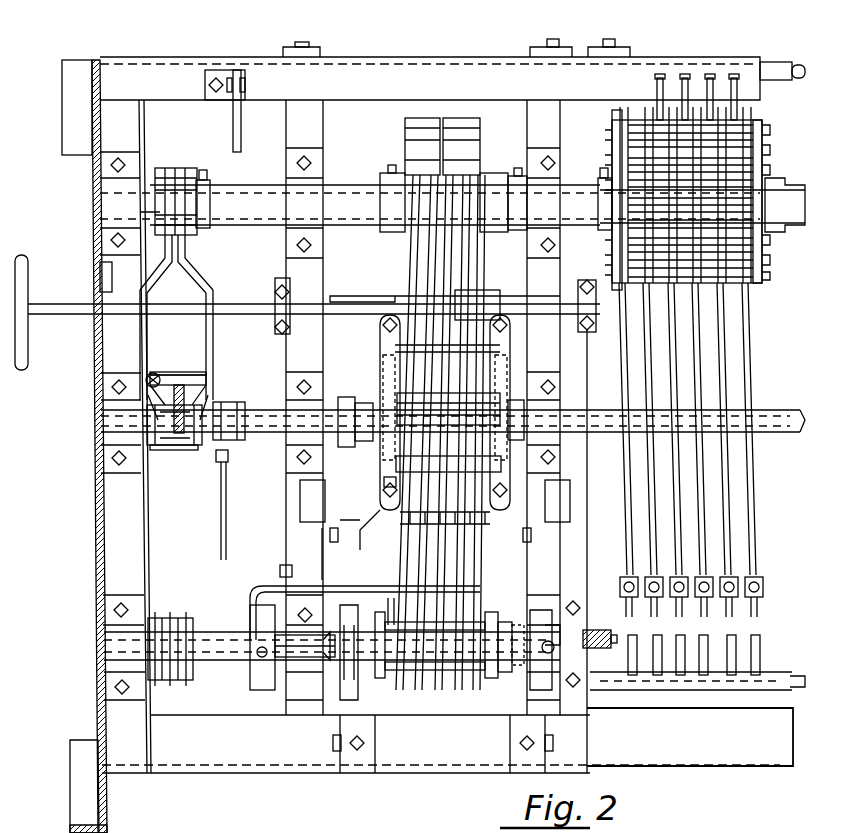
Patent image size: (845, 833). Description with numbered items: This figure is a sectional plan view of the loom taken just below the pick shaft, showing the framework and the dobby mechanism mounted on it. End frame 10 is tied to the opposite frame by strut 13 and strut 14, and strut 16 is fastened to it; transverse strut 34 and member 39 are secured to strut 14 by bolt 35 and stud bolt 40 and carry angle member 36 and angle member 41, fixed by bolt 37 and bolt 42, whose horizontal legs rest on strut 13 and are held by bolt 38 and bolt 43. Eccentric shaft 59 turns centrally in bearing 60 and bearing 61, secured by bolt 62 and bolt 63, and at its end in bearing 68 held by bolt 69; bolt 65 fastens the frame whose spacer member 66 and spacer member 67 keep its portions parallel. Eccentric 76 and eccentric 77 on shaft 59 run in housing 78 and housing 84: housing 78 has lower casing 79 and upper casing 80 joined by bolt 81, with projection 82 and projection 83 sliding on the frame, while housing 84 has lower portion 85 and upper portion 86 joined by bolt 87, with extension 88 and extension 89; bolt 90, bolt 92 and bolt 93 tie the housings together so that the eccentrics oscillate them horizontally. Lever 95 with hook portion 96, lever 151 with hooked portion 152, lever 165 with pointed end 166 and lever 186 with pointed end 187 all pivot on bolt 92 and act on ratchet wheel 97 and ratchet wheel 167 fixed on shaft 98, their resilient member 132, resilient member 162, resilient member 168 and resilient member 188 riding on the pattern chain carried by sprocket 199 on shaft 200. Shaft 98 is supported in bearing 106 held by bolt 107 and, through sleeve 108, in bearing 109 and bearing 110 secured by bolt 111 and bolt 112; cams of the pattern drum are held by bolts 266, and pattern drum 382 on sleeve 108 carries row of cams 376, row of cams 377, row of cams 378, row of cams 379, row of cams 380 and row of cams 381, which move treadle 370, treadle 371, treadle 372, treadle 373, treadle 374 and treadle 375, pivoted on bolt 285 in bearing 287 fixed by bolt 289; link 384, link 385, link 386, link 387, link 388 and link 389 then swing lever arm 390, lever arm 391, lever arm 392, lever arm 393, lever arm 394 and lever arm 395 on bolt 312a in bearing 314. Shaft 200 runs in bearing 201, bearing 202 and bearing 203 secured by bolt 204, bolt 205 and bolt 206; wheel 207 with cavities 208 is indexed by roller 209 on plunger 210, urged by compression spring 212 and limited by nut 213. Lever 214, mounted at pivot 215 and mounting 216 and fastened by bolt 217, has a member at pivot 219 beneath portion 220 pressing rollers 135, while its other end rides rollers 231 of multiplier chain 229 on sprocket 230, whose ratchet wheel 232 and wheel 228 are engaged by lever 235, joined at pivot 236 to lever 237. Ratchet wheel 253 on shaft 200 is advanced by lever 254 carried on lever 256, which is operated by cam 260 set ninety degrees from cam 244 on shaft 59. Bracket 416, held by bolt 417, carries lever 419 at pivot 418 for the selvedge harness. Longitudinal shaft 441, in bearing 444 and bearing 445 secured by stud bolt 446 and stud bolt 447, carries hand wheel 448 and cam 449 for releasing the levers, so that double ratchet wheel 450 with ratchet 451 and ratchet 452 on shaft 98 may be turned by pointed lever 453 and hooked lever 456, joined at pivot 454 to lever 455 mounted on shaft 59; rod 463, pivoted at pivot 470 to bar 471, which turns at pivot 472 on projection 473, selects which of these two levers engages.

The frame side wall 10 is at (94, 492).
The lower frame rail 13 is at (412, 760).
The upper frame rail 14 is at (433, 60).
The frame plate 16 is at (108, 515).
The bracket 34 is at (540, 50).
The bracket stud 35 is at (552, 38).
The support 36 is at (538, 760).
The stud 37 is at (545, 730).
The bearing block 38 is at (516, 742).
The bracket 39 is at (305, 52).
The stud 40 is at (298, 44).
The stud 41 is at (357, 760).
The stud 42 is at (333, 745).
The bearing block 43 is at (366, 744).
The shaft 59 is at (100, 420).
The bearing 60 is at (332, 422).
The bearing 61 is at (542, 420).
The bearing 62 is at (296, 387).
The bearing 63 is at (552, 380).
The stud 65 is at (330, 537).
The shaft 66 is at (372, 300).
The bar 67 is at (370, 545).
The bearing 68 is at (108, 400).
The bearing 69 is at (110, 386).
The arm 76 is at (380, 360).
The arm 77 is at (508, 362).
The arm 78 is at (382, 492).
The pin 79 is at (390, 478).
The link 80 is at (383, 370).
The pivot 81 is at (382, 322).
The bearing 82 is at (305, 320).
The bracket 83 is at (312, 501).
The link 84 is at (500, 392).
The arm 85 is at (500, 478).
The link 86 is at (507, 372).
The pivot 87 is at (507, 323).
The bearing 88 is at (578, 323).
The bracket 89 is at (557, 501).
The rod 90 is at (420, 350).
The gear 92 is at (396, 404).
The arm 93 is at (502, 460).
The gear 95 is at (415, 520).
The collar 96 is at (396, 168).
The gear 97 is at (413, 118).
The shaft 98 is at (105, 209).
The shaft sleeve 106 is at (100, 192).
The bearing 107 is at (110, 165).
The collar 108 is at (232, 188).
The collar 109 is at (520, 160).
The frame plate 110 is at (285, 160).
The frame plate 111 is at (557, 155).
The bearing 112 is at (302, 155).
The gear 132 is at (435, 664).
The pawl 135 is at (515, 659).
The gear 151 is at (440, 545).
The gear 152 is at (418, 414).
The gear 162 is at (435, 684).
The gear 165 is at (470, 536).
The gear 166 is at (460, 414).
The gear 167 is at (450, 118).
The gear 168 is at (450, 698).
The gear 186 is at (478, 545).
The collar 187 is at (486, 172).
The gear 188 is at (482, 680).
The clutch member 199 is at (498, 620).
The shaft 200 is at (108, 645).
The bearing 201 is at (108, 632).
The bracket 202 is at (305, 745).
The bearing 203 is at (572, 600).
The bearing 204 is at (112, 610).
The bearing 205 is at (304, 610).
The bearing 206 is at (575, 690).
The lever 207 is at (533, 608).
The link 208 is at (268, 690).
The link 209 is at (262, 630).
The link 210 is at (285, 655).
The clutch 212 is at (605, 652).
The clutch 213 is at (505, 616).
The rod 214 is at (205, 600).
The rod 215 is at (280, 568).
The stud 216 is at (278, 573).
The rod 217 is at (320, 565).
The link 219 is at (388, 606).
The gear 220 is at (378, 680).
The link 228 is at (235, 700).
The disc 229 is at (186, 680).
The bracket 230 is at (148, 612).
The disc 231 is at (168, 678).
The link 232 is at (225, 700).
The rod 235 is at (220, 507).
The pin 236 is at (221, 475).
The block 237 is at (222, 462).
The collar 244 is at (228, 402).
The lever 253 is at (360, 680).
The link 254 is at (380, 540).
The pin 256 is at (395, 453).
The link 260 is at (383, 384).
The ratchet 266 is at (765, 140).
The shaft 285 is at (790, 60).
The bracket 287 is at (594, 44).
The stud 289 is at (608, 38).
The shaft 312a is at (798, 672).
The bracket 314 is at (575, 719).
The rack bar 370 is at (752, 348).
The rack bar 371 is at (730, 330).
The rack bar 372 is at (700, 350).
The rack bar 373 is at (675, 429).
The rack bar 374 is at (645, 372).
The rack bar 375 is at (624, 352).
The housing plate 376 is at (760, 112).
The shaft 377 is at (733, 78).
The shaft 378 is at (709, 78).
The shaft 379 is at (684, 78).
The shaft 380 is at (658, 78).
The housing plate 381 is at (620, 110).
The ratchet 382 is at (765, 246).
The guide 384 is at (765, 578).
The guide 385 is at (758, 575).
The guide 386 is at (705, 603).
The guide 387 is at (677, 603).
The guide 388 is at (630, 595).
The guide 389 is at (628, 580).
The rod 390 is at (774, 667).
The rod 391 is at (743, 667).
The rod 392 is at (715, 667).
The rod 393 is at (689, 667).
The rod 394 is at (655, 667).
The rod 395 is at (625, 667).
The bracket 416 is at (214, 70).
The bearing 417 is at (208, 85).
The collar 418 is at (245, 88).
The rod 419 is at (233, 112).
The bracket 441 is at (182, 312).
The bearing 444 is at (278, 304).
The bearing 445 is at (100, 266).
The shaft 446 is at (282, 280).
The bearing 447 is at (100, 283).
The handle 448 is at (22, 255).
The collar 449 is at (480, 300).
The clutch 450 is at (173, 165).
The fork 451 is at (186, 166).
The fork 452 is at (163, 166).
The bracket 453 is at (213, 360).
The hub 454 is at (150, 424).
The plate 455 is at (165, 445).
The bracket 456 is at (143, 345).
The spring 463 is at (162, 401).
The screw 470 is at (155, 374).
The plate 471 is at (206, 378).
The plate 472 is at (185, 375).
The block 473 is at (191, 407).